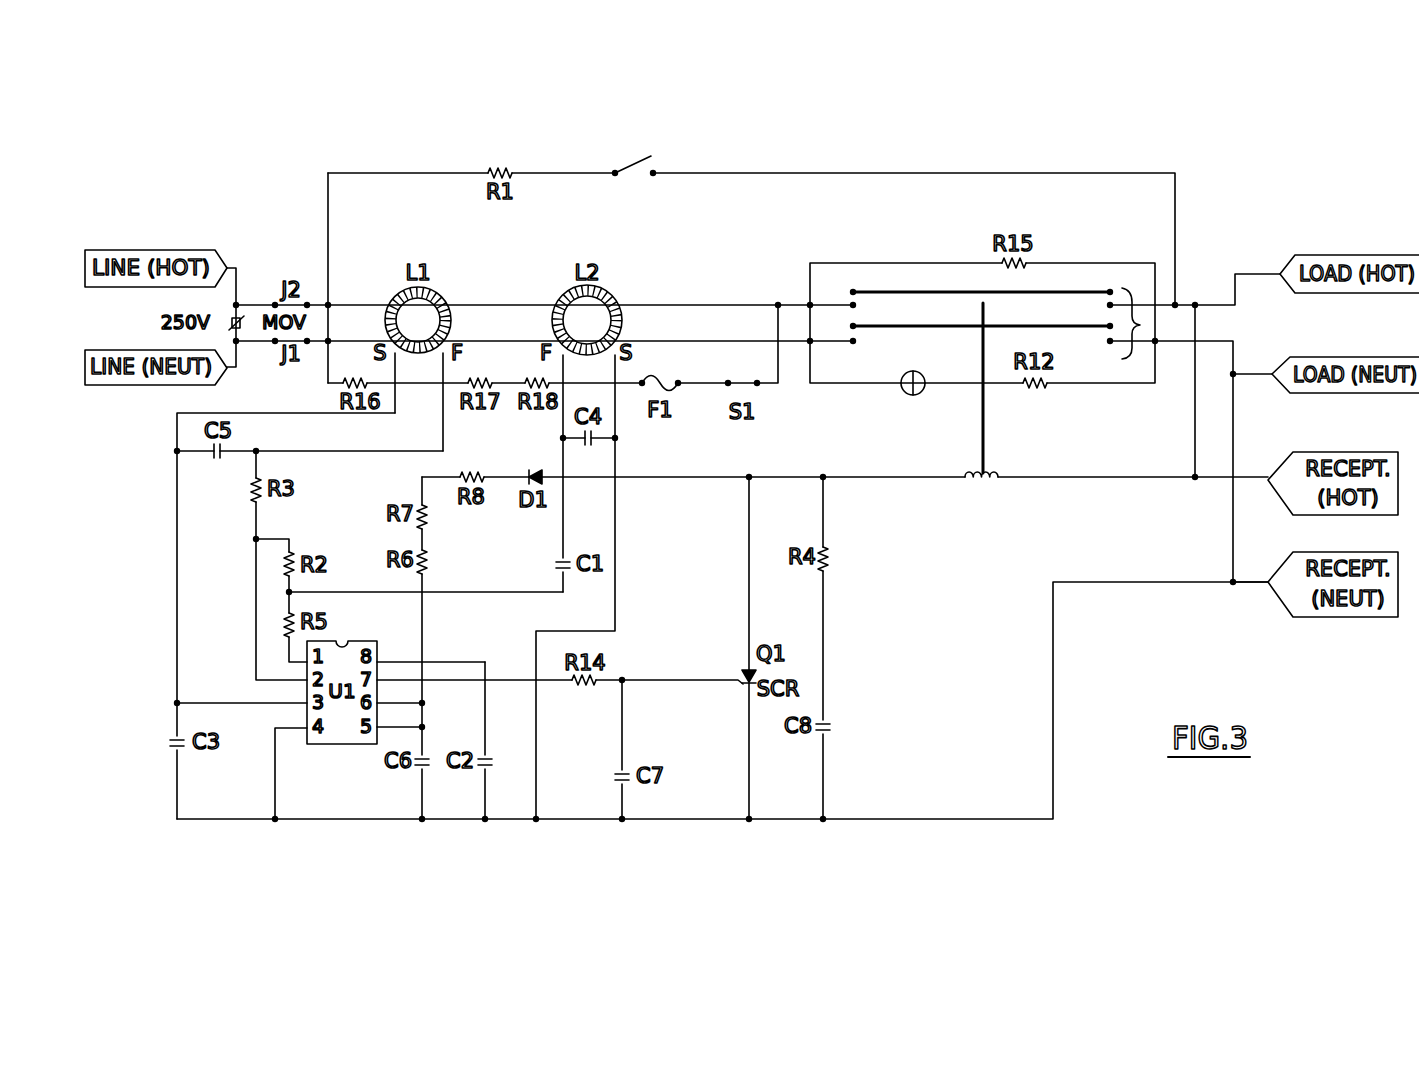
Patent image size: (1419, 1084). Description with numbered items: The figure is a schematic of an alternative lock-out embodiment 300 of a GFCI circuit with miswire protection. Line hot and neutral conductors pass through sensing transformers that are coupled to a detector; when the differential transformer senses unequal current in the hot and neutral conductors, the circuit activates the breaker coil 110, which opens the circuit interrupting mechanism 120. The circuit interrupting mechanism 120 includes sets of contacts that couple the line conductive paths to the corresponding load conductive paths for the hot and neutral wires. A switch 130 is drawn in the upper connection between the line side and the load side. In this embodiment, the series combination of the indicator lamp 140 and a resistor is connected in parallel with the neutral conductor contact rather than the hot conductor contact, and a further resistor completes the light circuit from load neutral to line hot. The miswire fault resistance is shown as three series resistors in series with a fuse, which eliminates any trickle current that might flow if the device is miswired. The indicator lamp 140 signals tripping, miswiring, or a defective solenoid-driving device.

The breaker coil 110 is at (1003, 474).
The circuit interrupting mechanism 120 is at (1140, 332).
The switch 130 is at (632, 165).
The indicator lamp 140 is at (909, 395).
The alternative lock-out embodiment 300 is at (920, 540).